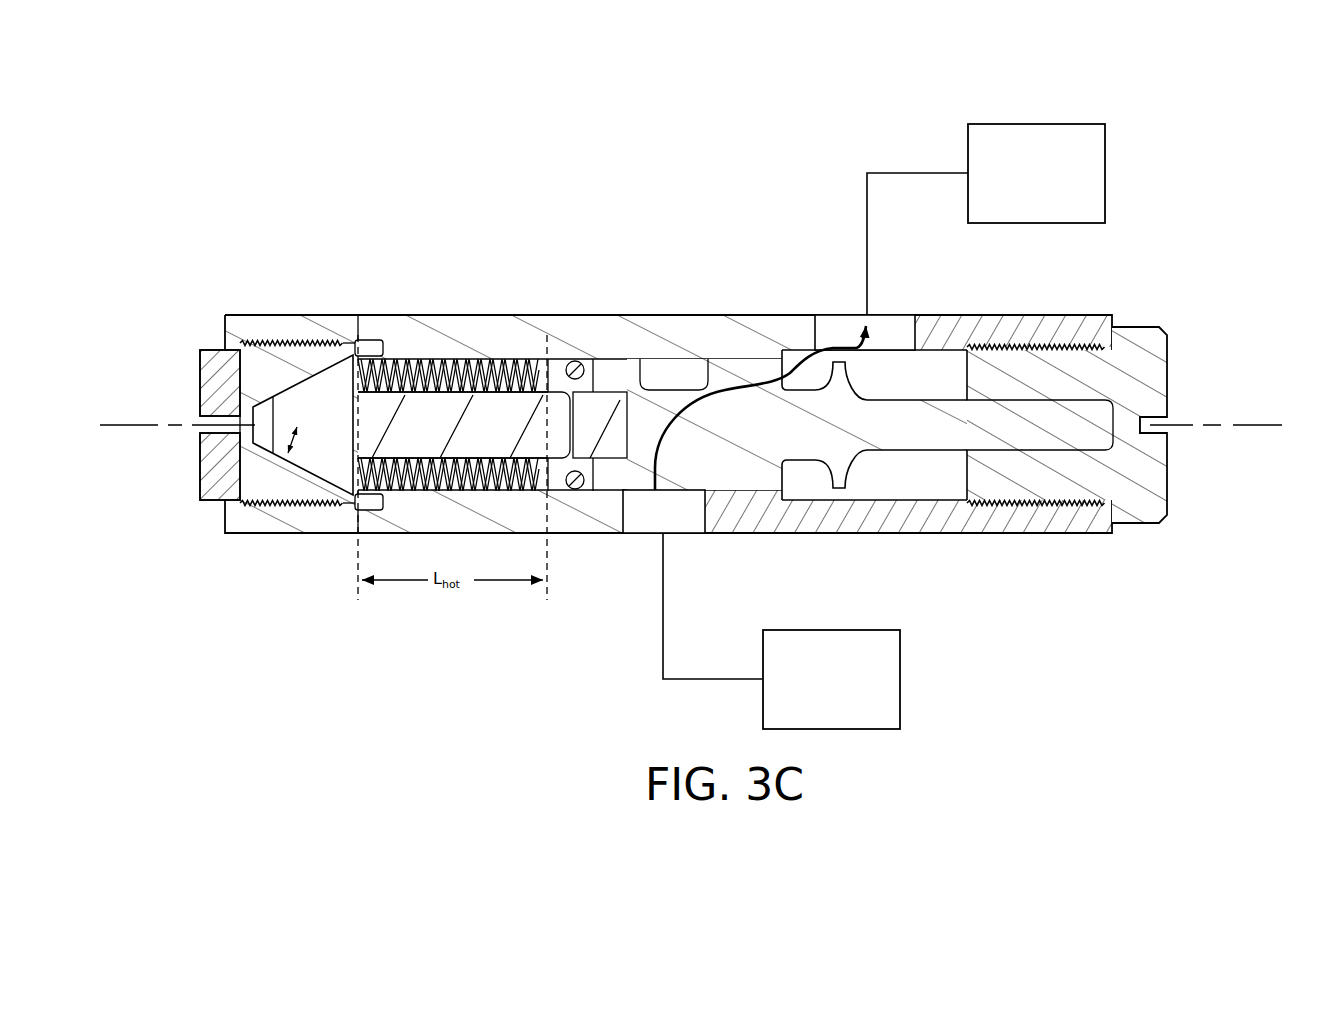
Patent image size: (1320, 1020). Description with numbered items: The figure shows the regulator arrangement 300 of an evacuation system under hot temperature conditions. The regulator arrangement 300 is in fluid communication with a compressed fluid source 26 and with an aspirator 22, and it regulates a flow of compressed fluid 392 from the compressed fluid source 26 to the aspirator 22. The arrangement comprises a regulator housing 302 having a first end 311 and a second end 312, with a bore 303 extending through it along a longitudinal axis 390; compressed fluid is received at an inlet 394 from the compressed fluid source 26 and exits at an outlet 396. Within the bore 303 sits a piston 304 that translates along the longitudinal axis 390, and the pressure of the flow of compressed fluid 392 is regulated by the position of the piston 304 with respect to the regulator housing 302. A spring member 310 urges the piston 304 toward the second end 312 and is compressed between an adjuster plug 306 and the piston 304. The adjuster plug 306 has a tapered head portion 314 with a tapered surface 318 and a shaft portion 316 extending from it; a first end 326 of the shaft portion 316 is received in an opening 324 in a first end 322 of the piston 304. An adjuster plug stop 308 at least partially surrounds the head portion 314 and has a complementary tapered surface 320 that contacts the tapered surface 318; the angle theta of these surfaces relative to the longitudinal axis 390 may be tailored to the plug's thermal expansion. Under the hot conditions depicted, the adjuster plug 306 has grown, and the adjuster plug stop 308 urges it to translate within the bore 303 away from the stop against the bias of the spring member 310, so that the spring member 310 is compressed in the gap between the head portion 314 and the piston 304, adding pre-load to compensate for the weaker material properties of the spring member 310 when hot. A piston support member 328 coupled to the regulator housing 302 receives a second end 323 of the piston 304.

The regulator arrangement 300 is at (723, 141).
The regulator housing 302 is at (600, 345).
The bore 303 is at (667, 365).
The piston 304 is at (707, 395).
The adjuster plug 306 is at (493, 375).
The adjuster plug stop 308 is at (262, 367).
The spring member 310 is at (462, 404).
The first end 311 is at (195, 304).
The second end 312 is at (1124, 305).
The head portion 314 is at (309, 394).
The shaft portion 316 is at (412, 423).
The tapered surface 318 is at (290, 388).
The tapered surface 320 is at (342, 489).
The first end 322 is at (546, 338).
The second end 323 is at (1110, 478).
The opening 324 is at (597, 385).
The first end 326 is at (582, 492).
The piston support member 328 is at (1114, 470).
The longitudinal axis 390 is at (1252, 424).
The flow of compressed fluid 392 is at (790, 347).
The inlet 394 is at (645, 544).
The outlet 396 is at (877, 306).
The aspirator 22 is at (1036, 173).
The compressed fluid source 26 is at (831, 679).